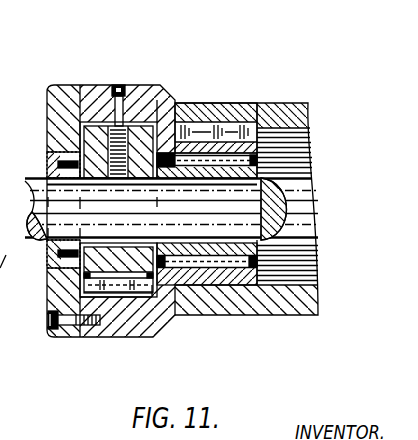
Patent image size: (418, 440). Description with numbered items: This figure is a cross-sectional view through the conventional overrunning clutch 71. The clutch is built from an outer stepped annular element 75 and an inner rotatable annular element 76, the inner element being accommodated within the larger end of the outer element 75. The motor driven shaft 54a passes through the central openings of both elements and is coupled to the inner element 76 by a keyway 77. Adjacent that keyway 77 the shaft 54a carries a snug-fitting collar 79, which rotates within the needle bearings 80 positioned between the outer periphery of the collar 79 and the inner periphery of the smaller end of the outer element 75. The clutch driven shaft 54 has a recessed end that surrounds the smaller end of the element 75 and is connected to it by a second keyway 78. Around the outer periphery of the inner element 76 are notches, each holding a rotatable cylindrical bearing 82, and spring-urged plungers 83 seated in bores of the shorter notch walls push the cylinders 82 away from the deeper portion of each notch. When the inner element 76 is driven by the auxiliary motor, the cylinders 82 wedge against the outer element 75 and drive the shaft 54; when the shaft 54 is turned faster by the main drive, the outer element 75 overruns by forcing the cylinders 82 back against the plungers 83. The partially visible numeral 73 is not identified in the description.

The overrunning clutch 71 is at (79, 76).
The shaft (partially shown numeral) 73 is at (9, 209).
The outer stepped annular element 75 is at (167, 102).
The inner rotatable annular element 76 is at (137, 128).
The keyway 77 is at (83, 182).
The keyway 78 is at (222, 127).
The collar 79 is at (262, 251).
The needle bearings 80 is at (223, 260).
The cylindrical bearing 82 is at (123, 288).
The spring-urged plungers 83 is at (103, 302).
The clutch driven shaft 54 is at (290, 303).
The motor driven shaft 54a is at (280, 192).